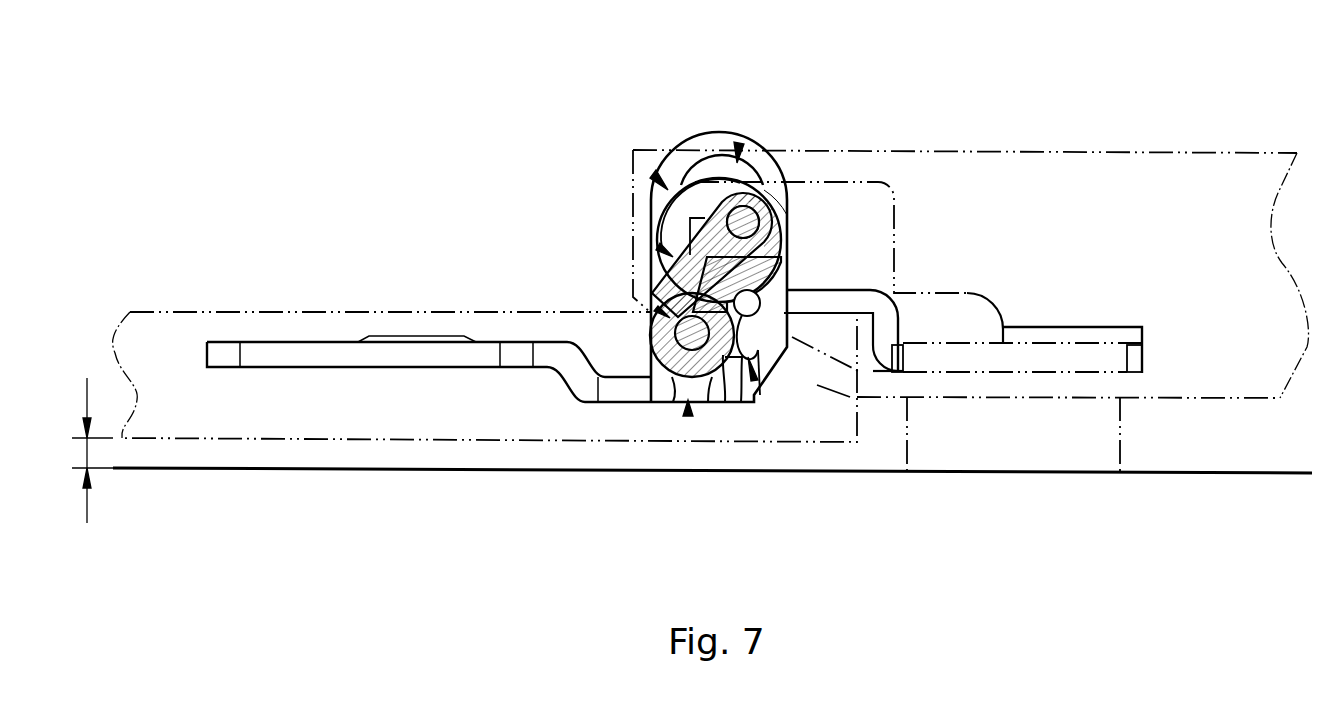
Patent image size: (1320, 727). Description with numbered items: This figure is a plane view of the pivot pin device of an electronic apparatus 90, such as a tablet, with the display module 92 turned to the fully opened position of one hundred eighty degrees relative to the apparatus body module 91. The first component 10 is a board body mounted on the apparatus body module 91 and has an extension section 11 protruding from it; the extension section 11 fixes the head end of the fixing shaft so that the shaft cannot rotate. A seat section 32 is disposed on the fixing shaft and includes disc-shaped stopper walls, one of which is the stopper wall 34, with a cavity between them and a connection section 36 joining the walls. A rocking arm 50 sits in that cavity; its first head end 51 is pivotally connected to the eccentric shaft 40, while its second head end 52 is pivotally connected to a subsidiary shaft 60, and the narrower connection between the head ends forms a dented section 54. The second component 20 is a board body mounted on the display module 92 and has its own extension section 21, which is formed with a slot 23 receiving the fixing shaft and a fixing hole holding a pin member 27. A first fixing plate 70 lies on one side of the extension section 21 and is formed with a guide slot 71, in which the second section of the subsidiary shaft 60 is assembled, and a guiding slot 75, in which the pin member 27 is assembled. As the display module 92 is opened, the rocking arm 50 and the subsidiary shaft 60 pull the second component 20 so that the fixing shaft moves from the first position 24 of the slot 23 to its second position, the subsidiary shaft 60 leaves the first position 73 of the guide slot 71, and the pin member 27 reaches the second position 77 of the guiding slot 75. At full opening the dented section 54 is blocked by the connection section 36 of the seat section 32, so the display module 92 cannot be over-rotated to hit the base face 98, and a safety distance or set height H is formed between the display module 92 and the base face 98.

The first component 10 is at (1086, 362).
The extension section 11 is at (970, 298).
The second component 20 is at (305, 342).
The extension section 21 is at (690, 137).
The slot 23 is at (724, 158).
The first position 24 is at (740, 143).
The pin member 27 is at (760, 315).
The seat section 32 is at (655, 176).
The stopper wall 34 is at (662, 203).
The connection section 36 is at (762, 273).
The eccentric shaft 40 is at (766, 183).
The rocking arm 50 is at (656, 243).
The first head end 51 is at (782, 232).
The second head end 52 is at (672, 330).
The dented section 54 is at (650, 280).
The subsidiary shaft 60 is at (648, 305).
The first fixing plate 70 is at (748, 380).
The guide slot 71 is at (716, 385).
The first position 73 is at (688, 414).
The guiding slot 75 is at (762, 352).
The second position 77 is at (747, 382).
The electronic apparatus 90 is at (1001, 130).
The apparatus body module 91 is at (1143, 160).
The display module 92 is at (207, 312).
The base face 98 is at (470, 470).
The set height H is at (87, 453).